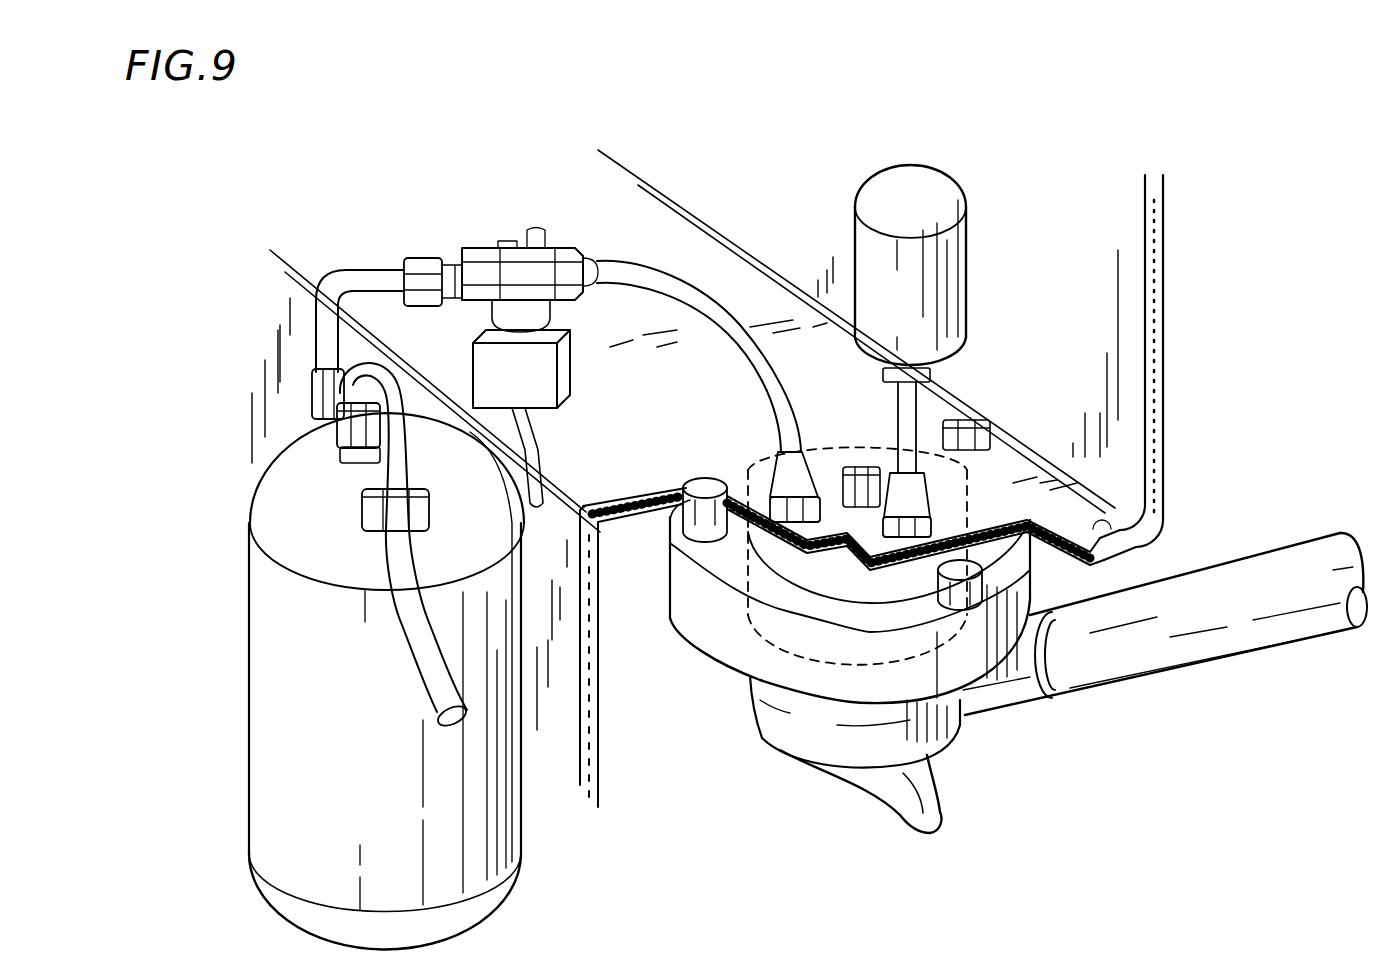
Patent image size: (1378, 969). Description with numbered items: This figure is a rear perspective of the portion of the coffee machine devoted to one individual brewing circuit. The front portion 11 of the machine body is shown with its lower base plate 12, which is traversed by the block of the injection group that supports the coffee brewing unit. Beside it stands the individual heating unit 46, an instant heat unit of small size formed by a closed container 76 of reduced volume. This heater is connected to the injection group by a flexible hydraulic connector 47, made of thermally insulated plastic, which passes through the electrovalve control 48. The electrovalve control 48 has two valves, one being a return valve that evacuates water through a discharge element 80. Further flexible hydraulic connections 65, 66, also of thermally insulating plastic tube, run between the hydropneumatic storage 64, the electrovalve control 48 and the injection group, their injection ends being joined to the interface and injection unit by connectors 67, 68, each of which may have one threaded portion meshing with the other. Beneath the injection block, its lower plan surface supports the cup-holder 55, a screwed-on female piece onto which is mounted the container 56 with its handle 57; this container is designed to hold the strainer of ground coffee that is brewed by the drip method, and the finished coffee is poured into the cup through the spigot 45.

The front portion 11 is at (1170, 333).
The lower base plate 12 is at (1118, 551).
The spigot 45 is at (935, 835).
The individual heating unit 46 is at (336, 656).
The flexible hydraulic connector 47 is at (416, 222).
The electrovalve control 48 is at (514, 223).
The cup-holder 55 is at (747, 647).
The container 56 is at (807, 740).
The handle 57 is at (1187, 640).
The hydropneumatic storage 64 is at (967, 247).
The hydraulic connection 65 is at (907, 417).
The hydraulic connection 66 is at (693, 287).
The connector 67 is at (773, 458).
The connector 68 is at (935, 515).
The closed container 76 is at (273, 713).
The discharge element 80 is at (603, 495).